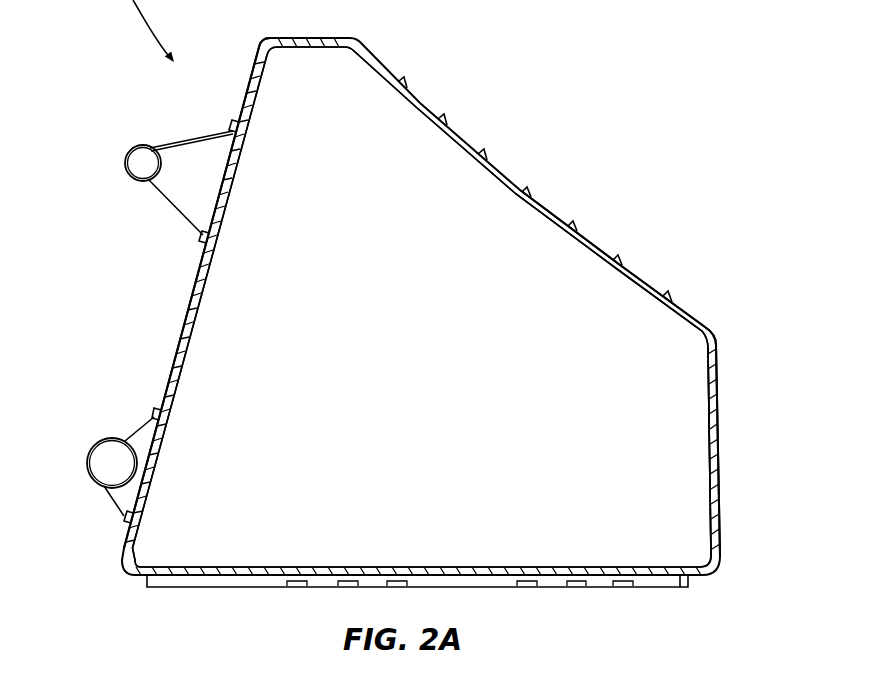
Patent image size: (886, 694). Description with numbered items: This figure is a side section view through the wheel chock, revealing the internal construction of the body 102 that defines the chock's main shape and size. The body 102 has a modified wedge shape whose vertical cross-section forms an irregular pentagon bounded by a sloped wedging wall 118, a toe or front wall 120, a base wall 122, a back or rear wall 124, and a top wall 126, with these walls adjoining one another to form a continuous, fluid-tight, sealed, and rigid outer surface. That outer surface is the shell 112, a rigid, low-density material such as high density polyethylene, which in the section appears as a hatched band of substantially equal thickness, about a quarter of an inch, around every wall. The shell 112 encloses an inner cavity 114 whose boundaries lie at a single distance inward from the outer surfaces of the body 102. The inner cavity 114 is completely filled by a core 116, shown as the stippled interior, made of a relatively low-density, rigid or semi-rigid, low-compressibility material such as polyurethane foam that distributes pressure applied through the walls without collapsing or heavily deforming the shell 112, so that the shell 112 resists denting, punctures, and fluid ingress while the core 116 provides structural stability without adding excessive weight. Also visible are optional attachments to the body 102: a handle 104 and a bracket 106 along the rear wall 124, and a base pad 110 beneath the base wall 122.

The body 102 is at (364, 42).
The handle 104 is at (133, 157).
The bracket 106 is at (92, 447).
The base pad 110 is at (450, 588).
The shell 112 is at (688, 315).
The inner cavity 114 is at (712, 448).
The core 116 is at (607, 362).
The wedging wall 118 is at (552, 218).
The front wall 120 is at (717, 392).
The base wall 122 is at (590, 574).
The rear wall 124 is at (183, 317).
The top wall 126 is at (271, 38).